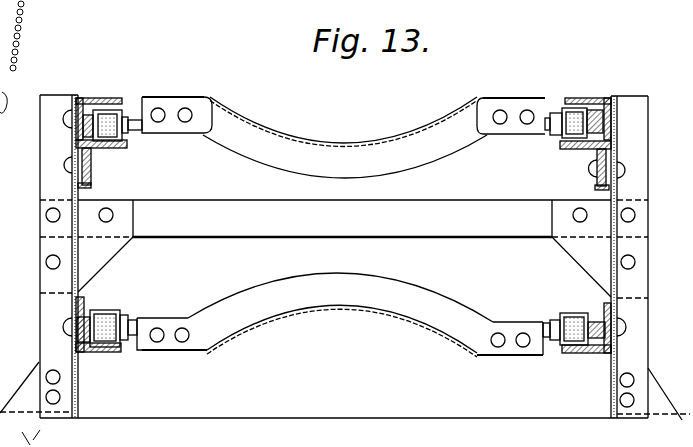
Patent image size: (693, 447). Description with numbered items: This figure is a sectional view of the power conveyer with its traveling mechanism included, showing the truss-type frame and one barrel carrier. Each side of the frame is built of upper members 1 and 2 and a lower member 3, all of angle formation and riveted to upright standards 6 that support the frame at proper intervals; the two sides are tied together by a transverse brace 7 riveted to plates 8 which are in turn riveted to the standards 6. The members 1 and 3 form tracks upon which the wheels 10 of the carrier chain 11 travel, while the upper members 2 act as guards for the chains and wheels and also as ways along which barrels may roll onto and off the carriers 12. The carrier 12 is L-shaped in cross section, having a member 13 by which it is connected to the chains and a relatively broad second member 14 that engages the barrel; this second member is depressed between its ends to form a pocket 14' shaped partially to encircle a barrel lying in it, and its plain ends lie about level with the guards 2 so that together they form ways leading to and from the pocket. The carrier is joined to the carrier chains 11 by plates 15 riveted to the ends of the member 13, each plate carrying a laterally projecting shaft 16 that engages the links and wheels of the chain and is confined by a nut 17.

The upper member 1 is at (93, 181).
The upper member 2 is at (110, 97).
The lower member 3 is at (73, 312).
The standard 6 is at (45, 173).
The transverse brace 7 is at (344, 309).
The plate 8 is at (344, 267).
The wheel 10 is at (123, 148).
The carrier chain 11 is at (127, 112).
The carrier 12 is at (340, 227).
The member 13 is at (265, 165).
The second member 14 is at (342, 225).
The pocket 14' is at (342, 229).
The plate 15 is at (341, 225).
The shaft 16 is at (145, 110).
The nut 17 is at (88, 97).